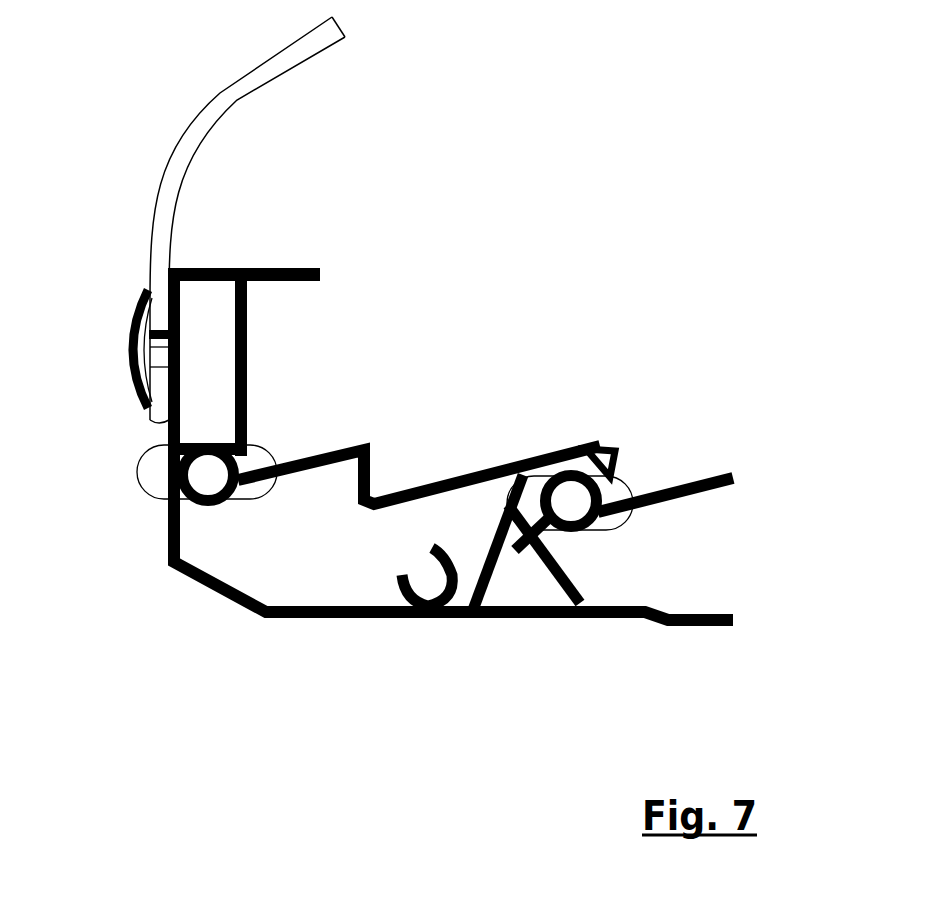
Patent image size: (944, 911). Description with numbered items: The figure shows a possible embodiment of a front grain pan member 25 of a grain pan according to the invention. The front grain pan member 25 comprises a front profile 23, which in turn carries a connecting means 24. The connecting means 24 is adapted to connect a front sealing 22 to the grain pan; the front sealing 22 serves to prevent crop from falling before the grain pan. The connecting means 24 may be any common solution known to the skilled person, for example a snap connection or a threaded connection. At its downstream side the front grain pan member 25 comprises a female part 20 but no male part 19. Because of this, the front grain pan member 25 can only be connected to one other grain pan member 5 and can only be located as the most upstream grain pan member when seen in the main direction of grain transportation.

The grain pan member 5 is at (719, 462).
The male part 19 is at (596, 540).
The female part 20 is at (513, 618).
The front sealing 22 is at (272, 81).
The front profile 23 is at (253, 363).
The connecting means 24 is at (108, 348).
The front grain pan member 25 is at (307, 578).